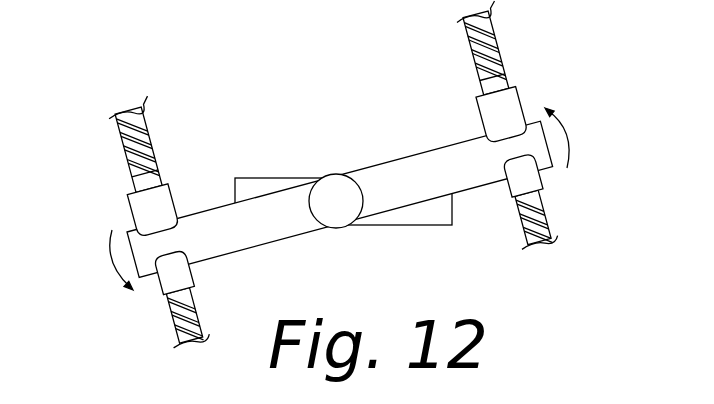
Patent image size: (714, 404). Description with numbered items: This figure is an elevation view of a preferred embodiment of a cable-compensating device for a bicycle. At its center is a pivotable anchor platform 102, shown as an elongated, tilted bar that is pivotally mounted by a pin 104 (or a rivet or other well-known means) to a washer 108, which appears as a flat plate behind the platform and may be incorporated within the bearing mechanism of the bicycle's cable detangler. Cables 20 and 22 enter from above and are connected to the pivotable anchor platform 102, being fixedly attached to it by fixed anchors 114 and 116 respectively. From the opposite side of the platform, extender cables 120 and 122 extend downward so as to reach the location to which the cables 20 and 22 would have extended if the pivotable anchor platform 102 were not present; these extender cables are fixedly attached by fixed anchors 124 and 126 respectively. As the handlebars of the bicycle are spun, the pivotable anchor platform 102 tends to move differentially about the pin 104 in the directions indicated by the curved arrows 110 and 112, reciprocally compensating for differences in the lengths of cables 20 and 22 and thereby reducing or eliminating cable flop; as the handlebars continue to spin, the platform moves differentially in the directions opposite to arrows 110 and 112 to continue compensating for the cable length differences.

The cable 20 is at (494, 31).
The cable 22 is at (150, 138).
The pivotable anchor platform 102 is at (545, 163).
The pin 104 is at (338, 208).
The washer 108 is at (427, 212).
The arrow 110 is at (579, 138).
The arrow 112 is at (93, 260).
The fixed anchor 114 is at (513, 110).
The fixed anchor 116 is at (167, 210).
The extender cable 120 is at (522, 225).
The extender cable 122 is at (192, 307).
The fixed anchor 124 is at (540, 189).
The fixed anchor 126 is at (162, 288).